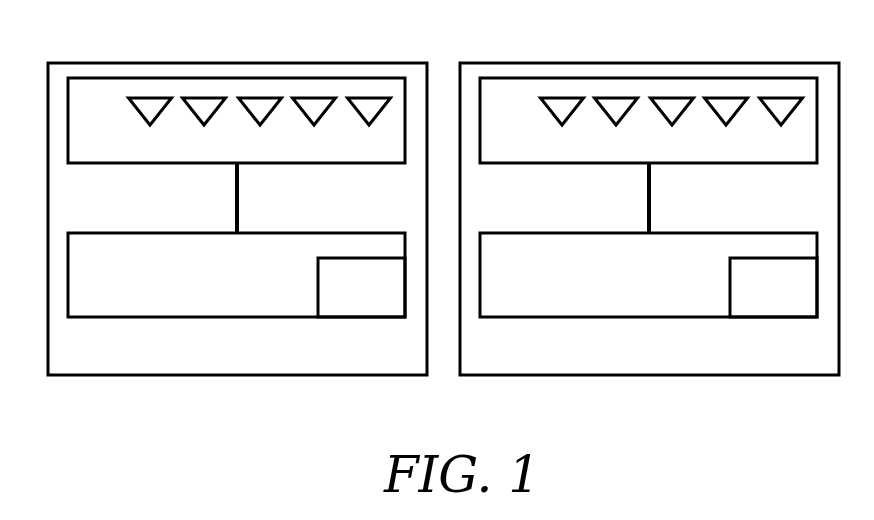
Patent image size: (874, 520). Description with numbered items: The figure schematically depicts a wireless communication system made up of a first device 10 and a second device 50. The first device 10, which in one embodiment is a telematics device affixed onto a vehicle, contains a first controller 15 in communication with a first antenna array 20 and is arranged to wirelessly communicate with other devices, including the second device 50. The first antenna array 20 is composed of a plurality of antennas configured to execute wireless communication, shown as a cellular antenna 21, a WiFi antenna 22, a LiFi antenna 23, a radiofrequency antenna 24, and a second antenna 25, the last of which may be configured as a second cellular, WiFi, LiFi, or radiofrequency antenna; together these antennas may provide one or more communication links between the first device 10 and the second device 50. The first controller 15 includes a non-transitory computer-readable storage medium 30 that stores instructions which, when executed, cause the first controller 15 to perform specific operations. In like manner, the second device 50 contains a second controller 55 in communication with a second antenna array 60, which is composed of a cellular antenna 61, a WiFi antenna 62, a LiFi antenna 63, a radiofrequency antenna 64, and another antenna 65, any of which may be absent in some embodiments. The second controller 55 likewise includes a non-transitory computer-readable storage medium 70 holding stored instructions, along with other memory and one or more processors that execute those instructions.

The first device 10 is at (222, 361).
The first controller 15 is at (222, 292).
The first antenna array 20 is at (88, 147).
The cellular antenna 21 is at (148, 97).
The WiFi antenna 22 is at (203, 97).
The LiFi antenna 23 is at (258, 97).
The radiofrequency antenna 24 is at (315, 97).
The second antenna 25 is at (373, 97).
The non-transitory computer-readable storage medium 30 is at (347, 302).
The second device 50 is at (634, 361).
The second controller 55 is at (634, 292).
The second antenna array 60 is at (500, 147).
The cellular antenna 61 is at (560, 97).
The WiFi antenna 62 is at (615, 97).
The LiFi antenna 63 is at (670, 97).
The radiofrequency antenna 64 is at (727, 97).
The another antenna 65 is at (785, 97).
The non-transitory computer-readable storage medium 70 is at (759, 302).